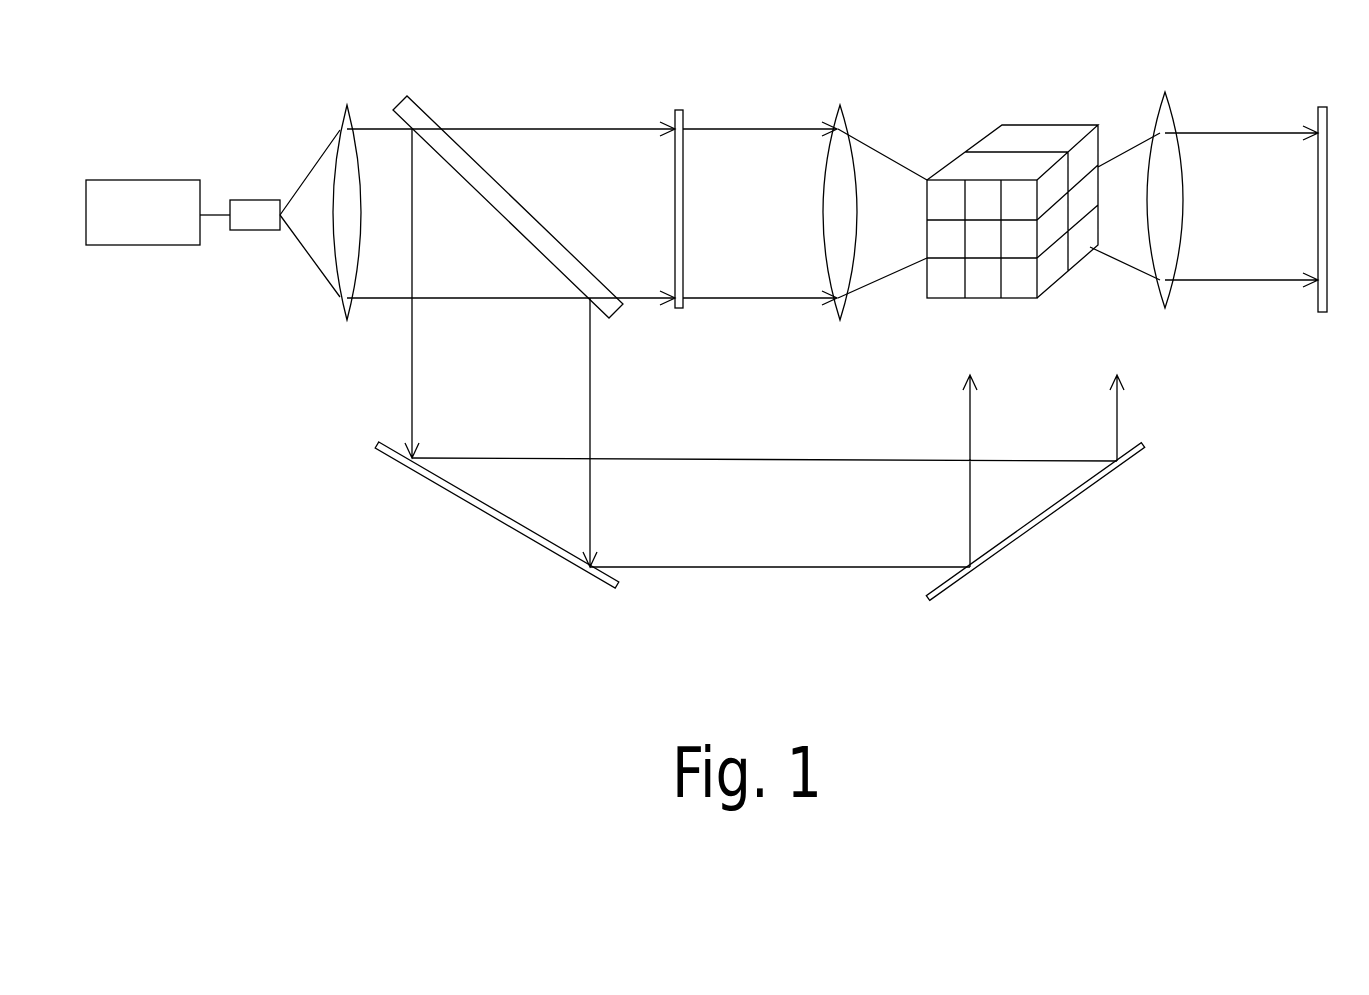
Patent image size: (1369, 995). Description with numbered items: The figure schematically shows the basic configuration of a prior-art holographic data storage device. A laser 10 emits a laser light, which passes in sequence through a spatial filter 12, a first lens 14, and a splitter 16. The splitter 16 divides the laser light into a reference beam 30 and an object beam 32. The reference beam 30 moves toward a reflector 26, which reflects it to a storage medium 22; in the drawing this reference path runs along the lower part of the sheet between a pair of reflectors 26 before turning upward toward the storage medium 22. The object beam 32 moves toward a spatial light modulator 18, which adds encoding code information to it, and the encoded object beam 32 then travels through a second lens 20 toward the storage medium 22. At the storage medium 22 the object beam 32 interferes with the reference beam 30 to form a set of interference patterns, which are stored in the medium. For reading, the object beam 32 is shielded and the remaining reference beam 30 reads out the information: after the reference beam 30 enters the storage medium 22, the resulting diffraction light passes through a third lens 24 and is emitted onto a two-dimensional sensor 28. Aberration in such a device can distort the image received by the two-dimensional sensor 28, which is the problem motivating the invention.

The laser 10 is at (142, 180).
The spatial filter 12 is at (255, 200).
The first lens 14 is at (347, 105).
The splitter 16 is at (425, 111).
The spatial light modulator 18 is at (679, 110).
The second lens 20 is at (840, 105).
The storage medium 22 is at (1047, 125).
The third lens 24 is at (1164, 92).
The reflector 26 is at (430, 478).
The 2-D sensor 28 is at (1320, 107).
The reference beam 30 is at (788, 567).
The object beam 32 is at (902, 153).